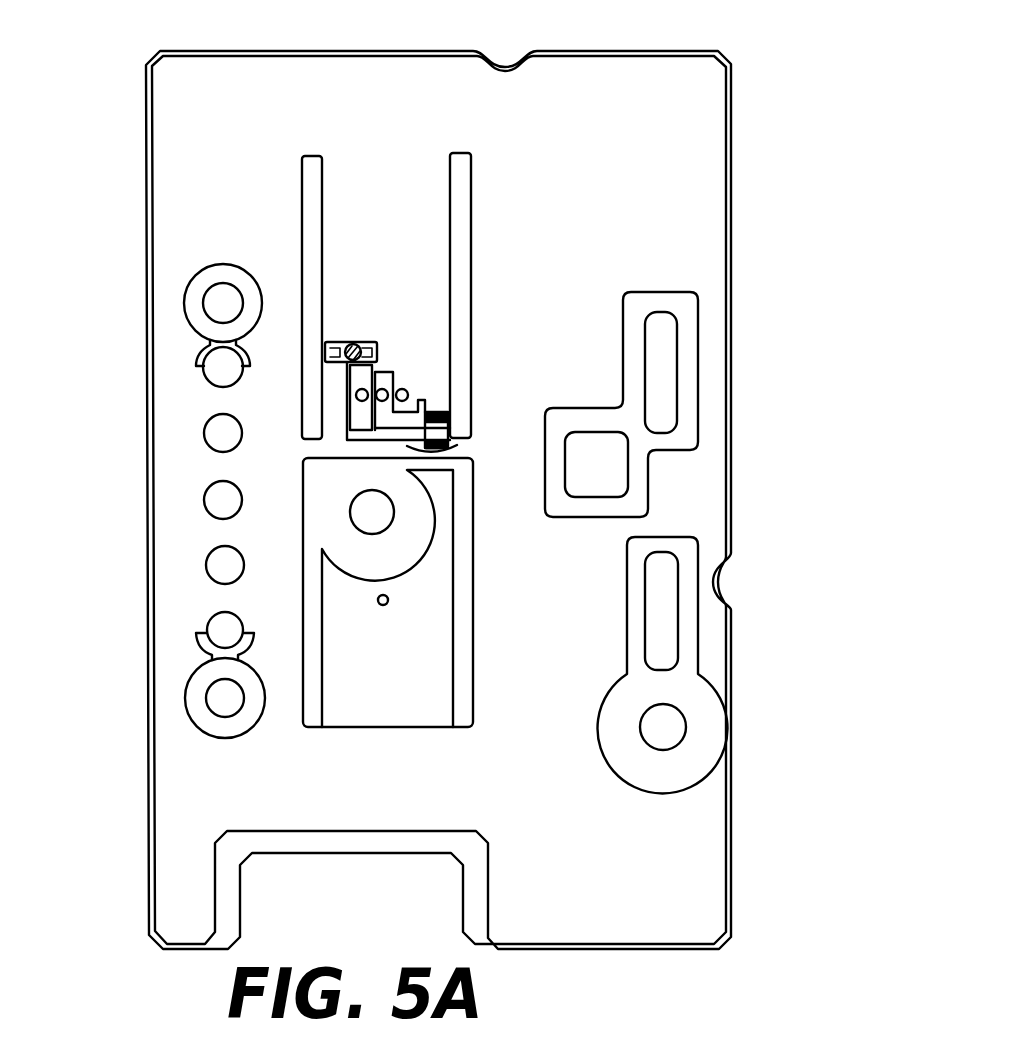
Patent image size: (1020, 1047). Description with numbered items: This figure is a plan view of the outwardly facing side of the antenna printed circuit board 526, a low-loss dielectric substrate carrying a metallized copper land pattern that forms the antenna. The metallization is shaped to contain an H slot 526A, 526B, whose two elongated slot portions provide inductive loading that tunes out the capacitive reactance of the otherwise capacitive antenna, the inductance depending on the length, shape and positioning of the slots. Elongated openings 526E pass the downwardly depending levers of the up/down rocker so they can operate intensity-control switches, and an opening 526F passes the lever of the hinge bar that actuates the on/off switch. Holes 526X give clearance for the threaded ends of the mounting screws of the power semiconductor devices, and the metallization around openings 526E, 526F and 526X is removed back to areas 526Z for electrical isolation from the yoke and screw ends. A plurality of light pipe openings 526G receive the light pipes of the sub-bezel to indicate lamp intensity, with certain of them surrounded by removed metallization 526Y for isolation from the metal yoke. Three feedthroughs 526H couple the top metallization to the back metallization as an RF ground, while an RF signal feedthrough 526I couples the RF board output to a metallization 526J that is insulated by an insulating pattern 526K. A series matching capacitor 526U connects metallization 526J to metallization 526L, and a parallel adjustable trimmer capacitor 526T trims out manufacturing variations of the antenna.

The antenna printed circuit board 526 is at (630, 43).
The H slot 526A is at (450, 186).
The H slot 526B is at (453, 700).
The elongated openings 526E is at (663, 383).
The opening 526F is at (606, 474).
The light pipe openings 526G is at (222, 369).
The feedthroughs 526H is at (375, 367).
The RF signal feedthrough 526I is at (382, 402).
The metallization 526J is at (578, 366).
The insulating pattern 526K is at (420, 398).
The metallization 526L is at (410, 450).
The adjustable trimmer capacitor 526T is at (355, 346).
The capacitor 526U is at (434, 408).
The holes 526X is at (386, 513).
The removed metallization area 526Y is at (223, 268).
The removed metallization areas 526Z is at (683, 309).